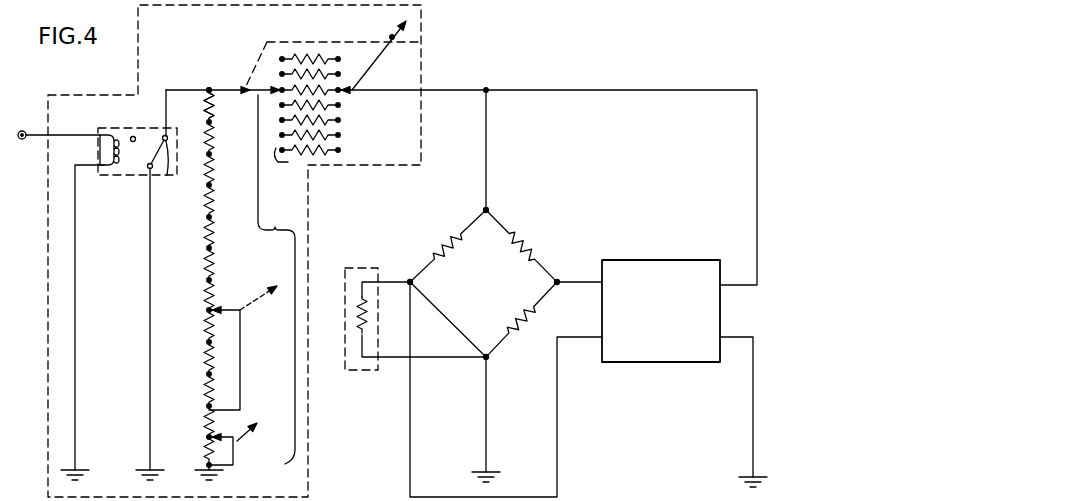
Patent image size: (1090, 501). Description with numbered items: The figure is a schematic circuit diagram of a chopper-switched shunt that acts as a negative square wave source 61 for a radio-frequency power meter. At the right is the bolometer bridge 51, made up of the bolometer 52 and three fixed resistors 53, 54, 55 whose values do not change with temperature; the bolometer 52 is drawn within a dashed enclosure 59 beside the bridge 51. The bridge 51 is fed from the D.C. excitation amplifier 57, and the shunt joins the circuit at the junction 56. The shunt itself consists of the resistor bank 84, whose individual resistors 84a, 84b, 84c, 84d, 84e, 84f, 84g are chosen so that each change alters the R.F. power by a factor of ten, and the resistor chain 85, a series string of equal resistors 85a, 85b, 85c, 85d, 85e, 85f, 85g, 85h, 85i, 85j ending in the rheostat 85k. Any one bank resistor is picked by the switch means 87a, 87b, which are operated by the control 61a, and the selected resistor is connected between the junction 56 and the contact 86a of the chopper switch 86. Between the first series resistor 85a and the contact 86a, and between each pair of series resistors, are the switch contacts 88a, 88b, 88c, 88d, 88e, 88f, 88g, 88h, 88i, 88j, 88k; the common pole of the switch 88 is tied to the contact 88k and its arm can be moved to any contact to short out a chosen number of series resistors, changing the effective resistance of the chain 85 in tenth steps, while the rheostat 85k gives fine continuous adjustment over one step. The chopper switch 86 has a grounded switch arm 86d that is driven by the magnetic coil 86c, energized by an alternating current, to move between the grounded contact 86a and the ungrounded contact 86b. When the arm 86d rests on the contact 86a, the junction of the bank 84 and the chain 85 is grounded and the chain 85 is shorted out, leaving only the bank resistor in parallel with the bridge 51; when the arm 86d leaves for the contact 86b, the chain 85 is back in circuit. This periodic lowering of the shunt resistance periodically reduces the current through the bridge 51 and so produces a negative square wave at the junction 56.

The negative square wave source 61 is at (98, 92).
The control 61a is at (421, 22).
The chopper switch 86 is at (127, 176).
The contact 86a is at (162, 280).
The contact 86b is at (133, 136).
The magnetic coil 86c is at (100, 150).
The switch arm 86d is at (144, 152).
The resistor chain 85 is at (276, 279).
The series resistor 85a is at (213, 101).
The series resistor 85b is at (213, 135).
The series resistor 85c is at (213, 163).
The series resistor 85d is at (213, 195).
The series resistor 85e is at (213, 226).
The series resistor 85f is at (225, 263).
The series resistor 85g is at (213, 288).
The series resistor 85h is at (213, 323).
The series resistor 85i is at (213, 354).
The series resistor 85j is at (213, 386).
The rheostat 85k is at (233, 453).
The switch 88 is at (244, 310).
The switch contact 88a is at (208, 88).
The switch contact 88b is at (207, 122).
The switch contact 88c is at (207, 153).
The switch contact 88d is at (207, 185).
The switch contact 88e is at (207, 217).
The switch contact 88f is at (207, 248).
The switch contact 88g is at (207, 280).
The switch contact 88h is at (207, 312).
The switch contact 88i is at (207, 343).
The switch contact 88j is at (207, 375).
The switch contact 88k is at (205, 417).
The switch means 87a is at (365, 86).
The switch means 87b is at (249, 88).
The resistor bank 84 is at (285, 166).
The bank resistor 84a is at (335, 60).
The bank resistor 84b is at (336, 74).
The bank resistor 84c is at (338, 93).
The bank resistor 84d is at (340, 106).
The bank resistor 84e is at (338, 121).
The bank resistor 84f is at (340, 135).
The bank resistor 84g is at (338, 150).
The junction 56 is at (492, 87).
The bolometer bridge 51 is at (483, 283).
The bolometer 52 is at (363, 317).
The fixed resistor 53 is at (454, 238).
The fixed resistor 54 is at (519, 254).
The fixed resistor 55 is at (514, 336).
The D.C. excitation amplifier 57 is at (657, 262).
The sensor housing 59 is at (358, 371).